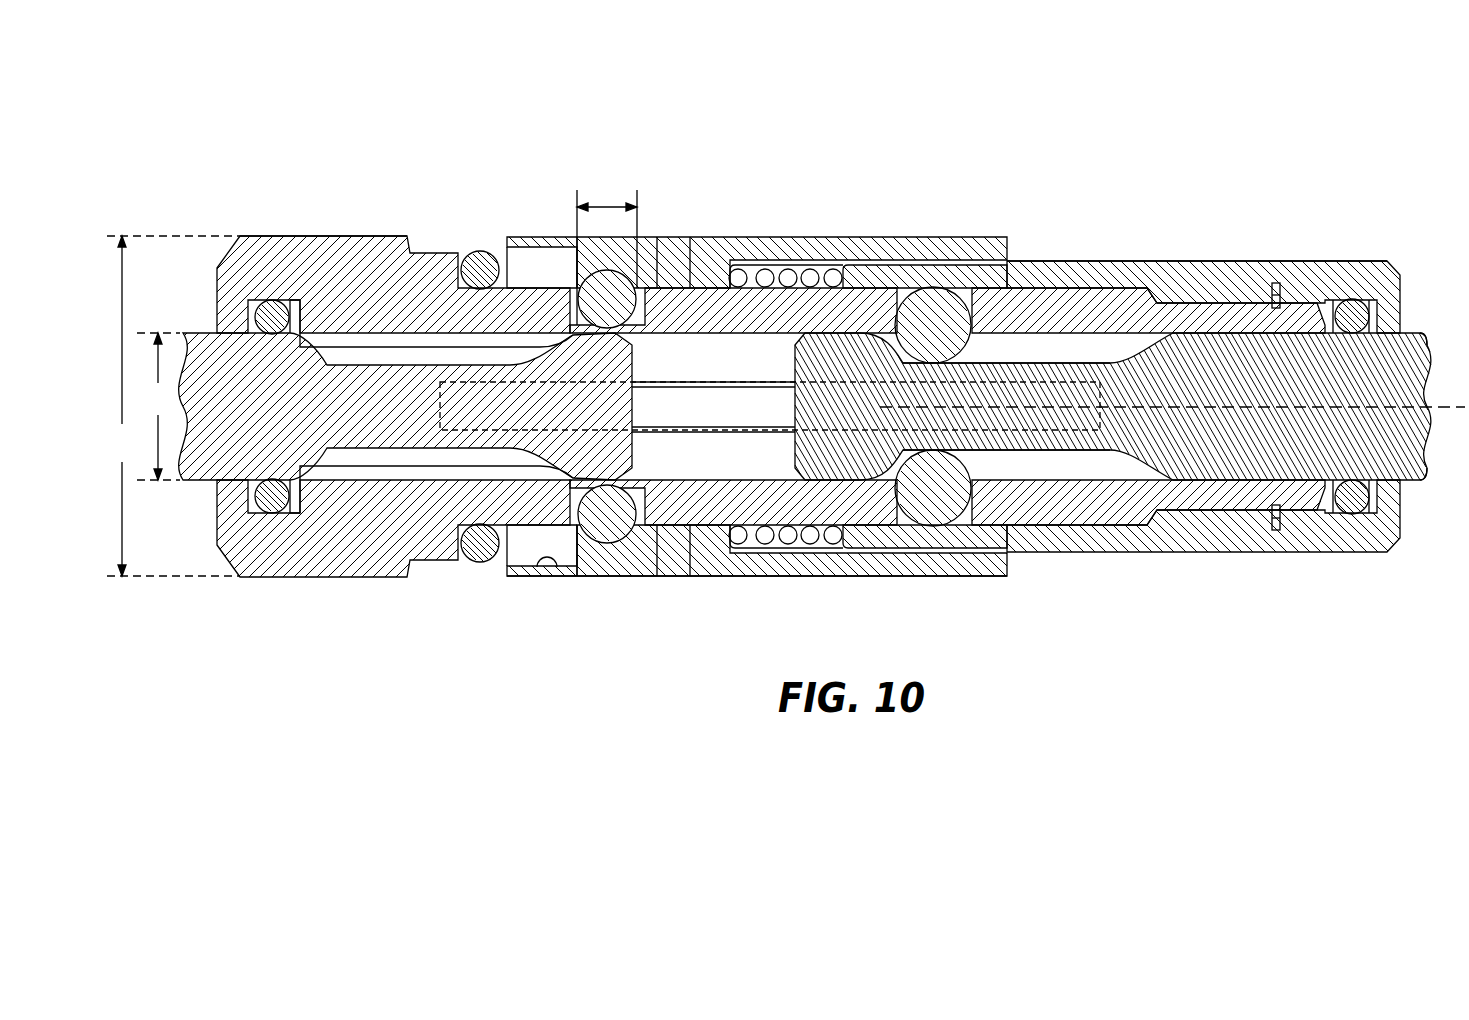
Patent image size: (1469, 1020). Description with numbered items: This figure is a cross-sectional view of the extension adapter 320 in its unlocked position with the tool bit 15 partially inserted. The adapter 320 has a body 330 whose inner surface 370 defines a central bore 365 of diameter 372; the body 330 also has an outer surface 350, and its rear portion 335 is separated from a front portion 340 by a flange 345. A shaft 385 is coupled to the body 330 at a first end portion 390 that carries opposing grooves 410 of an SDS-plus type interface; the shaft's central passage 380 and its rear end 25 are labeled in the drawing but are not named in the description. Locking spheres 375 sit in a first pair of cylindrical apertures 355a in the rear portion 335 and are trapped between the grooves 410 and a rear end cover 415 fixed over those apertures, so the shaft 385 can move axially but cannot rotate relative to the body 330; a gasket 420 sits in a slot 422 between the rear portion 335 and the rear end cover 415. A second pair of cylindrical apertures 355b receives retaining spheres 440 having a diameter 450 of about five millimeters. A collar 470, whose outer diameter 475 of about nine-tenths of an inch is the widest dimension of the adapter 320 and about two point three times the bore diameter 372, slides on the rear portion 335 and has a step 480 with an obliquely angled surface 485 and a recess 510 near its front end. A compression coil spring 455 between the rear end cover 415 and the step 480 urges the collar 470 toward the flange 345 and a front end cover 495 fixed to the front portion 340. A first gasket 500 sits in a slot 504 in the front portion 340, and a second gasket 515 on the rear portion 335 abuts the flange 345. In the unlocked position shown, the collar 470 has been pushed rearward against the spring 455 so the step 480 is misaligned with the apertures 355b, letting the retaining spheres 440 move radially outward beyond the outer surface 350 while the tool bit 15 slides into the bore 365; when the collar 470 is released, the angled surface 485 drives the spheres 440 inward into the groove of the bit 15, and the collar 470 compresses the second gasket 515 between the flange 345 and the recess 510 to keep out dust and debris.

The tool bit 15 is at (278, 424).
The second conduit 25 is at (1437, 398).
The adapter 320 is at (1143, 87).
The body 330 is at (1132, 300).
The rear portion 335 is at (1011, 193).
The front portion 340 is at (278, 182).
The flange 345 is at (438, 252).
The outer surface 350 is at (735, 325).
The first cylindrical apertures 355a is at (987, 330).
The second cylindrical apertures 355b is at (573, 312).
The central bore 365 is at (732, 330).
The inner surface 370 is at (707, 352).
The diameter 372 is at (158, 406).
The locking sphere 375 is at (930, 310).
The tube 380 is at (712, 405).
The shaft 385 is at (1393, 353).
The first end portion 390 is at (1153, 433).
The grooves 410 is at (1037, 357).
The rear end cover 415 is at (1237, 260).
The gasket 420 is at (1353, 299).
The slot 422 is at (1381, 504).
The retaining sphere 440 is at (620, 290).
The diameter 450 is at (591, 231).
The compression coil spring 455 is at (800, 548).
The collar 470 is at (860, 237).
The outer diameter 475 is at (172, 406).
The step 480 is at (682, 540).
The obliquely angled surface 485 is at (612, 553).
The front end cover 495 is at (340, 236).
The first gasket 500 is at (267, 512).
The slot 504 is at (300, 500).
The recess 510 is at (533, 568).
The second gasket 515 is at (478, 251).